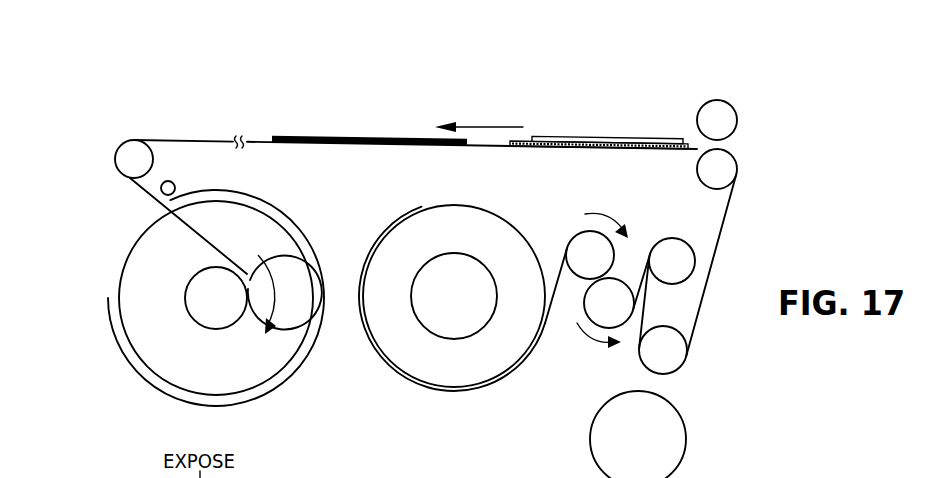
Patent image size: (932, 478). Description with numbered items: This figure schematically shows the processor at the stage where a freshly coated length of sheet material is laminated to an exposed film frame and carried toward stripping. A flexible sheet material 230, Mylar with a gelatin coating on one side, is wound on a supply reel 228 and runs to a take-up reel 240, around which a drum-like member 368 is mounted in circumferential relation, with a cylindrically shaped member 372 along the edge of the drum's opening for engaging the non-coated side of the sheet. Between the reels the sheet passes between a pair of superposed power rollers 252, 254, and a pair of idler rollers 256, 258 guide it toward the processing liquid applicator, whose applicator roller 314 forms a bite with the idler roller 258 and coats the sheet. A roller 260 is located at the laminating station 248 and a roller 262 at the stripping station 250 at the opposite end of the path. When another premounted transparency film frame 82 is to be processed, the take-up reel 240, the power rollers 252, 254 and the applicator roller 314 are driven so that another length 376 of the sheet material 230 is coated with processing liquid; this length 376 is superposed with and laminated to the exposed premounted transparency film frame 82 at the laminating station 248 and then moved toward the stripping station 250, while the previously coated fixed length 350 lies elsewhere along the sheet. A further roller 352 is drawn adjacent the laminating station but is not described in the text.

The stripping station 250 is at (122, 129).
The roller 262 is at (143, 160).
The cylindrically shaped member 372 is at (174, 188).
The take-up reel 240 is at (118, 313).
The drum-like member 368 is at (150, 385).
The fixed length 350 is at (347, 138).
The length 376 is at (595, 150).
The premounted transparency film frame 82 is at (612, 137).
The pressure roller 352 is at (727, 113).
The roller 260 is at (697, 171).
The laminating station 248 is at (752, 139).
The flexible sheet material 230 is at (718, 241).
The power roller 252 is at (580, 240).
The power roller 254 is at (585, 302).
The idler roller 256 is at (670, 250).
The idler roller 258 is at (653, 360).
The supply reel 228 is at (440, 387).
The applicator roller 314 is at (676, 424).